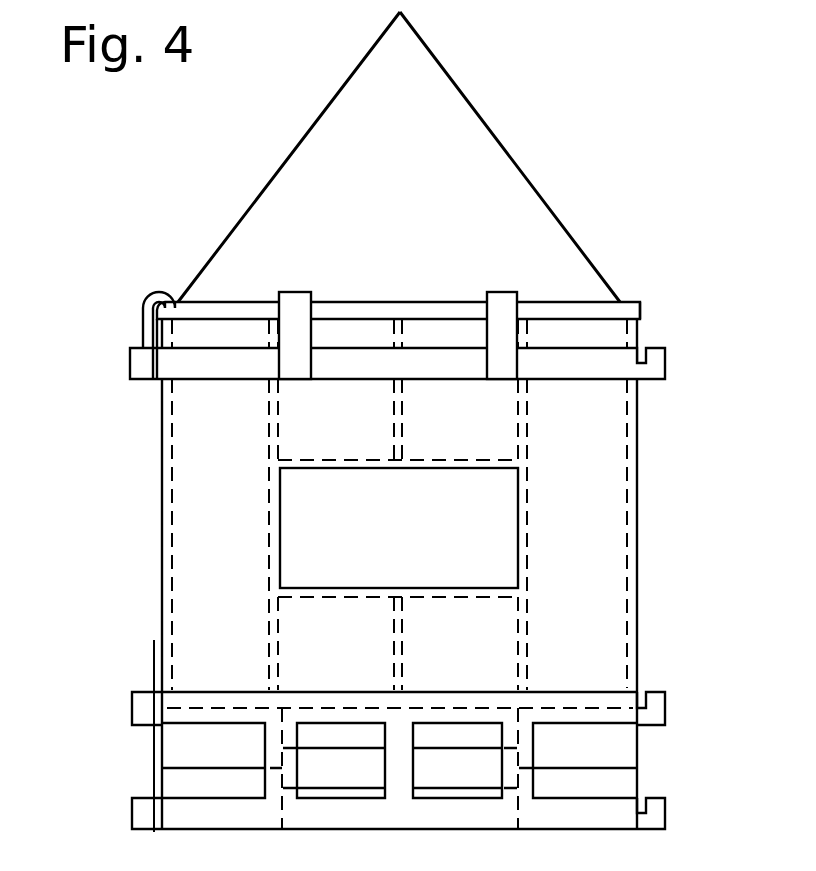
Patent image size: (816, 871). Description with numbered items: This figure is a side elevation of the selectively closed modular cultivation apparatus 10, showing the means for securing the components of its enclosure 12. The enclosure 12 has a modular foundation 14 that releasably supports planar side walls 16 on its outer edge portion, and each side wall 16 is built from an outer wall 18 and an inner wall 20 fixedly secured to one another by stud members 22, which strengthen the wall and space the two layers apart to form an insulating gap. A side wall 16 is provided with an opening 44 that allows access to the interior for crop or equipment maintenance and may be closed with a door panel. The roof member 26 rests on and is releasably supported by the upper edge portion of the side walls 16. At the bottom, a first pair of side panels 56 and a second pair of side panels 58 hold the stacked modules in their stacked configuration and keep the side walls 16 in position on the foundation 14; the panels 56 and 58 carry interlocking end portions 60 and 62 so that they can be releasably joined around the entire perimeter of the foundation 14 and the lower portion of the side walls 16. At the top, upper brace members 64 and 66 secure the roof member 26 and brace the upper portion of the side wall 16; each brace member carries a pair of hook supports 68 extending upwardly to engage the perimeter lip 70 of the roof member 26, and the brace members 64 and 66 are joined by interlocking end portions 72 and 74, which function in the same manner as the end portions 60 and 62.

The selectively closed modular cultivation apparatus 10 is at (574, 116).
The enclosure 12 is at (120, 533).
The modular foundation 14 is at (627, 748).
The side walls 16 is at (615, 578).
The outer wall 18 is at (637, 490).
The inner wall 20 is at (627, 476).
The stud members 22 is at (520, 435).
The roof member 26 is at (542, 212).
The openings 44 is at (403, 544).
The first pair of side panels 56 is at (545, 700).
The second pair of side panels 58 is at (158, 752).
The interlocking end portions 60 is at (130, 710).
The interlocking end portions 62 is at (158, 700).
The upper brace member 64 is at (245, 372).
The upper brace member 66 is at (153, 362).
The hook supports 68 is at (145, 313).
The perimeter lip 70 is at (627, 303).
The interlocking end portions 72 is at (130, 362).
The interlocking end portions 74 is at (157, 375).